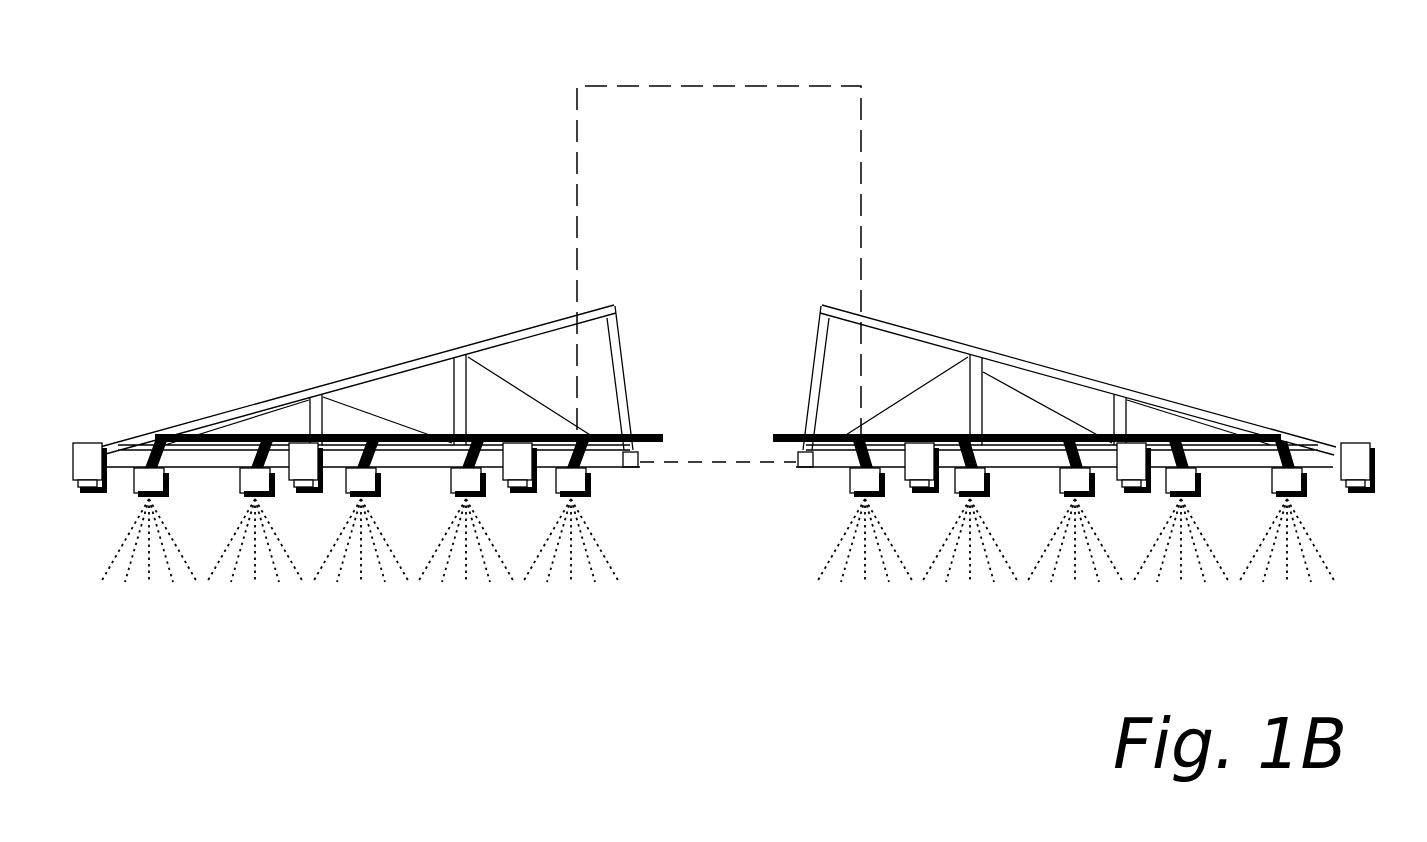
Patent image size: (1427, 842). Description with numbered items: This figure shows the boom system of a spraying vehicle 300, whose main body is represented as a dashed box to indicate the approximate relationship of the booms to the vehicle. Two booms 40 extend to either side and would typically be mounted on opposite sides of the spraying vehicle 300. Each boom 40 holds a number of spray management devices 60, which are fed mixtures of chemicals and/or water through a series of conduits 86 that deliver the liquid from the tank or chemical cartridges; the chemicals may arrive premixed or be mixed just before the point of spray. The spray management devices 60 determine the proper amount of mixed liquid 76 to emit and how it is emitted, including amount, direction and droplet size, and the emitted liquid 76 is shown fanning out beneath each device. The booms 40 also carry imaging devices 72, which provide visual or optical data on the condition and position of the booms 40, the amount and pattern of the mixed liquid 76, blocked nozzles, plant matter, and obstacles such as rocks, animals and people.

The spraying vehicle 300 is at (516, 106).
The boom 40 is at (246, 404).
The conduit 86 is at (664, 440).
The spray management device 60 is at (382, 477).
The imaging device 72 is at (96, 493).
The mixed liquid 76 is at (270, 583).